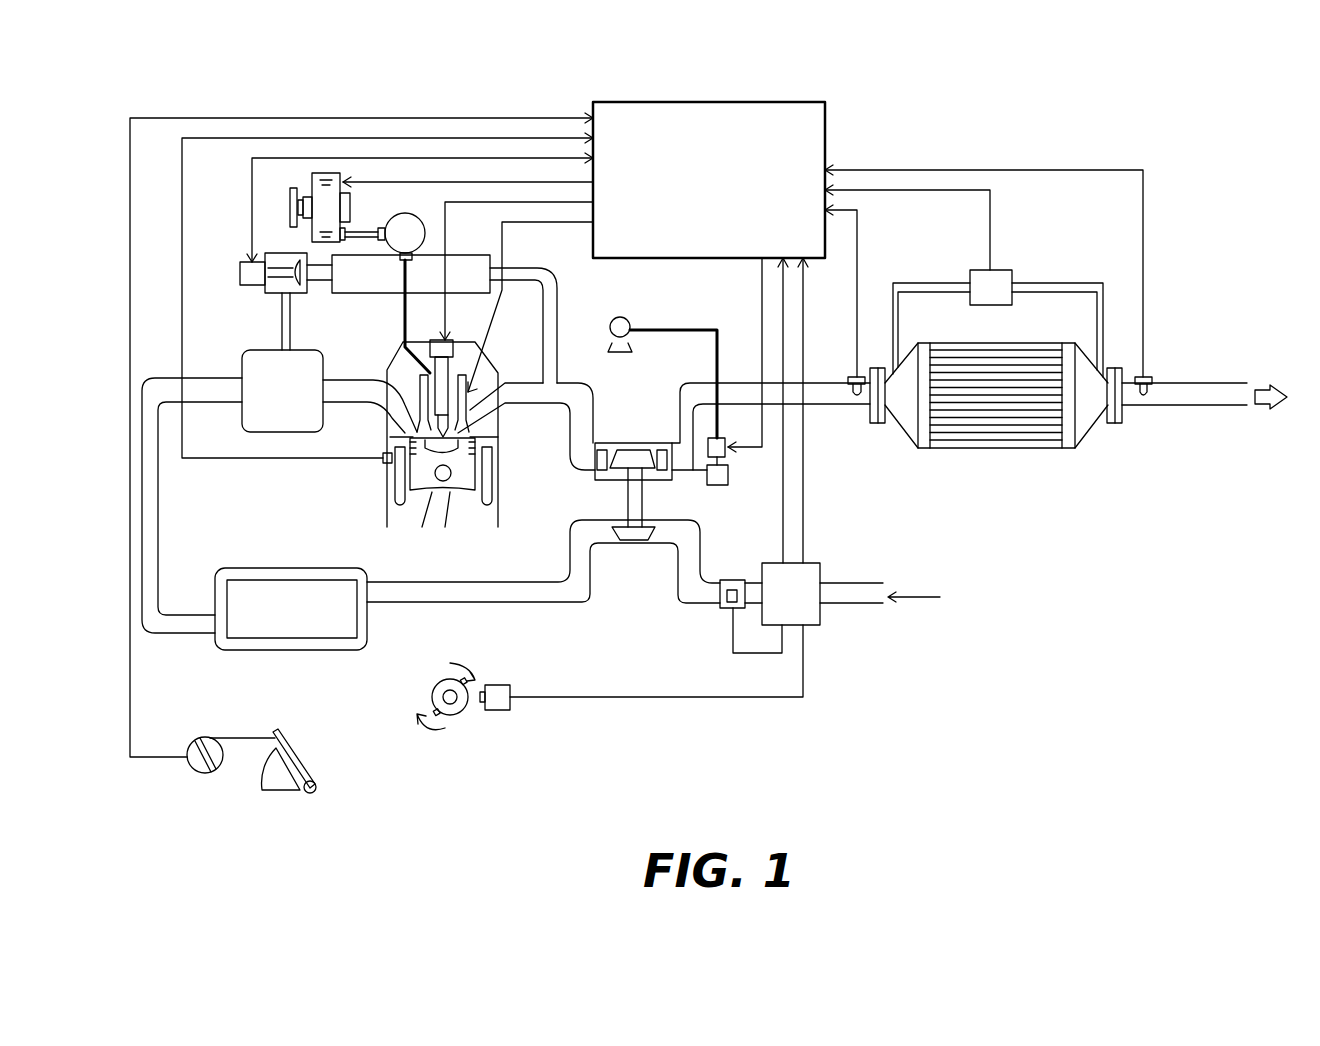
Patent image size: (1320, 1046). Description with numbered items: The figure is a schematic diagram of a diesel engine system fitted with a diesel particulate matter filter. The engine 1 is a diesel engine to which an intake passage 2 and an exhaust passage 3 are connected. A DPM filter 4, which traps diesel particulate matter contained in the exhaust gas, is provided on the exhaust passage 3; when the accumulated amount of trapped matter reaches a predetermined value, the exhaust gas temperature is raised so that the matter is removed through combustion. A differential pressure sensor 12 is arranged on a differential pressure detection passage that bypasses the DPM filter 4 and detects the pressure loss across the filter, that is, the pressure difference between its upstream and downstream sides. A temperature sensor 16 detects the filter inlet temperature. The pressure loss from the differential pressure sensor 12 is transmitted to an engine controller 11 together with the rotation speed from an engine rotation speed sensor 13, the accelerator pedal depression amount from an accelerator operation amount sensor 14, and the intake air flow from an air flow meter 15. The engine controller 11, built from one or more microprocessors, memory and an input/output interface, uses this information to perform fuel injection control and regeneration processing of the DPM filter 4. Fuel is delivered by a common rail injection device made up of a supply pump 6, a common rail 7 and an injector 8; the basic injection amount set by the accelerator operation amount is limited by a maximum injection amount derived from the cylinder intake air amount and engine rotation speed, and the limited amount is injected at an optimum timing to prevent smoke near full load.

The engine 1 is at (512, 427).
The intake passage 2 is at (358, 393).
The exhaust passage 3 is at (582, 402).
The DPM filter 4 is at (985, 448).
The supply pump 6 is at (327, 173).
The common rail 7 is at (413, 222).
The injector 8 is at (447, 330).
The engine controller 11 is at (773, 113).
The differential pressure sensor 12 is at (1003, 272).
The engine rotation speed sensor 13 is at (497, 710).
The accelerator operation amount sensor 14 is at (192, 770).
The air flow meter 15 is at (732, 580).
The temperature sensor 16 is at (847, 372).